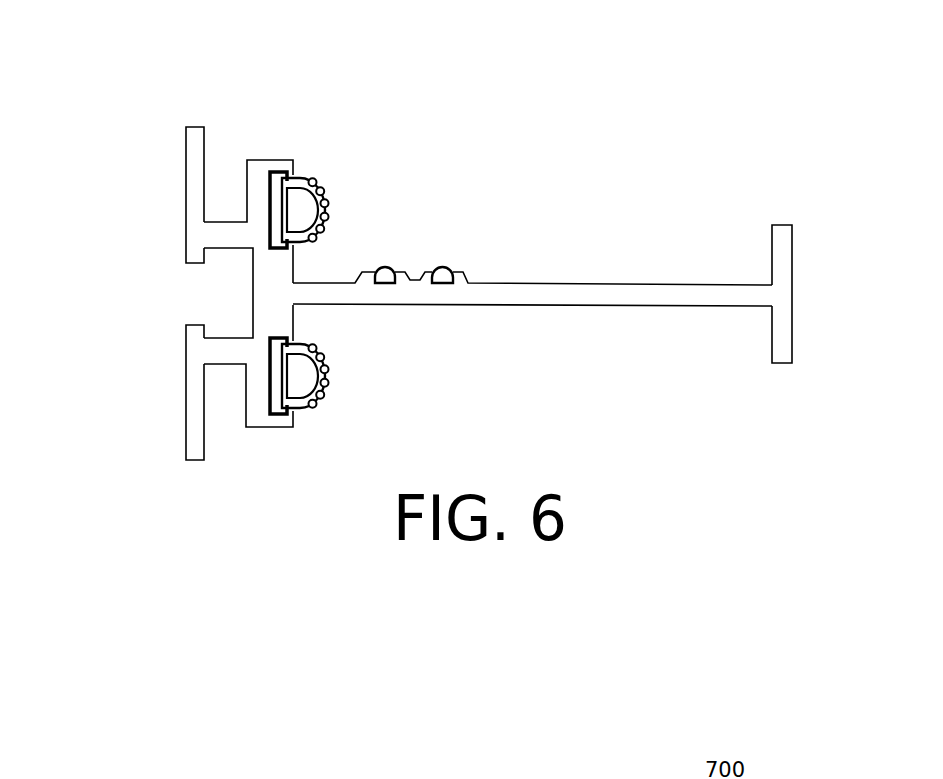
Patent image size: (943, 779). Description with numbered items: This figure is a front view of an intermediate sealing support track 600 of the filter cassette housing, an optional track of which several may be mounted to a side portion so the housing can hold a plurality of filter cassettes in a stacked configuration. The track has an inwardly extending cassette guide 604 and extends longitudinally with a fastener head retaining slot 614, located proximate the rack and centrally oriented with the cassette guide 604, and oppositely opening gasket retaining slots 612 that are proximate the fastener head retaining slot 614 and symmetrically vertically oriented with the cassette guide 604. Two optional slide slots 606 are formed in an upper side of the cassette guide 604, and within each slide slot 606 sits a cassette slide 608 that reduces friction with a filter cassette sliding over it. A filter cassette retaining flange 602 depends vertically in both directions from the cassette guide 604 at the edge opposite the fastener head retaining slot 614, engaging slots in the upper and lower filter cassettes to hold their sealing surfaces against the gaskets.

The intermediate sealing support track 600 is at (662, 95).
The filter cassette retaining flange 602 is at (783, 233).
The cassette guide 604 is at (643, 300).
The slide slot 606 is at (463, 275).
The cassette slide 608 is at (388, 266).
The gasket retaining slot 612 is at (272, 417).
The fastener head retaining slot 614 is at (242, 300).